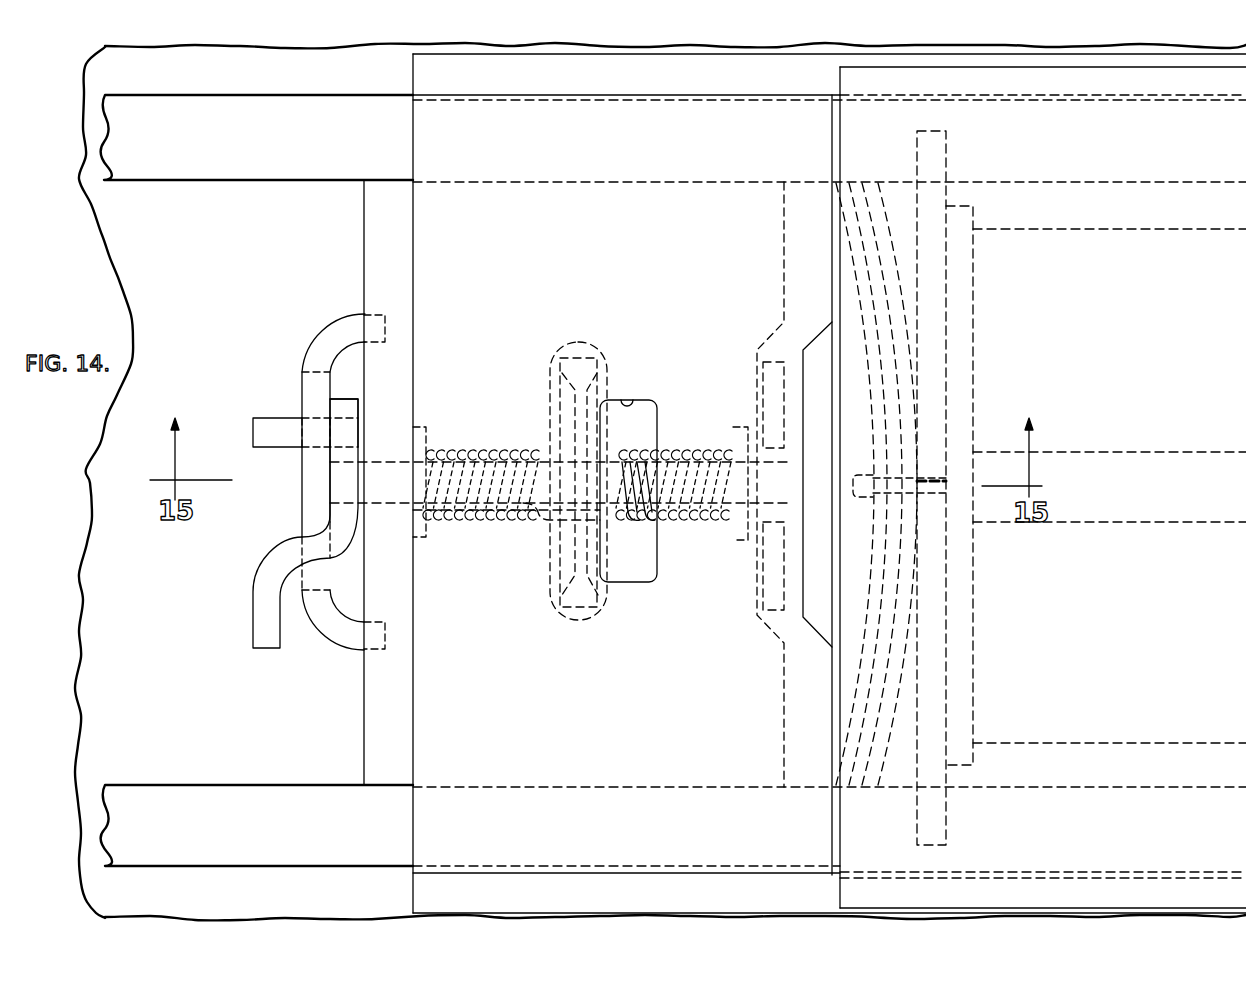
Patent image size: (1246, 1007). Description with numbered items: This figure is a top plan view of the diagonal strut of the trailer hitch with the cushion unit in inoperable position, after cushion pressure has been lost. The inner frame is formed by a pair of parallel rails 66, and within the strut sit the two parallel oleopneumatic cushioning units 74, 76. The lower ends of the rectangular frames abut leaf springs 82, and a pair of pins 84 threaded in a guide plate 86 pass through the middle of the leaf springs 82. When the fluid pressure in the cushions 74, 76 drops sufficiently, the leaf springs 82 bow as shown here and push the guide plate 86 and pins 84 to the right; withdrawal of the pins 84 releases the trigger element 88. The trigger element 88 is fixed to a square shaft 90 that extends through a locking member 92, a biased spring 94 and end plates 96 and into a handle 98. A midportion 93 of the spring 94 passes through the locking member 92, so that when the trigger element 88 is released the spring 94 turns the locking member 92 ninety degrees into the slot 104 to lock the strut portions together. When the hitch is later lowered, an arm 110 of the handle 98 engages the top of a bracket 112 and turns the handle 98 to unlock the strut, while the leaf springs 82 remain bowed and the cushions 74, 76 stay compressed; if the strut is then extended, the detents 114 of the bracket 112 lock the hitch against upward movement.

The rails 66 is at (201, 170).
The oleopneumatic cushioning unit 74 is at (1178, 349).
The oleopneumatic cushioning unit 76 is at (1212, 592).
The leaf springs 82 is at (866, 215).
The pins 84 is at (866, 475).
The guide plate 86 is at (974, 338).
The trigger element 88 is at (766, 346).
The square shaft 90 is at (392, 461).
The locking member 92 is at (553, 390).
The midportion of spring 93 is at (621, 518).
The spring 94 is at (512, 450).
The end plates 96 is at (428, 432).
The handle 98 is at (266, 606).
The slot 104 is at (628, 404).
The arm 110 is at (273, 418).
The bracket 112 is at (310, 510).
The detents 114 is at (380, 312).